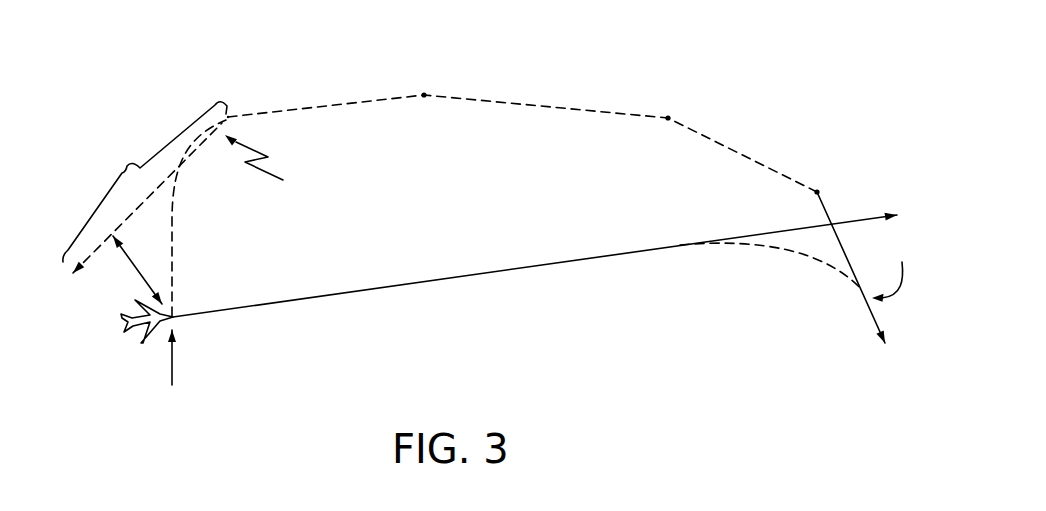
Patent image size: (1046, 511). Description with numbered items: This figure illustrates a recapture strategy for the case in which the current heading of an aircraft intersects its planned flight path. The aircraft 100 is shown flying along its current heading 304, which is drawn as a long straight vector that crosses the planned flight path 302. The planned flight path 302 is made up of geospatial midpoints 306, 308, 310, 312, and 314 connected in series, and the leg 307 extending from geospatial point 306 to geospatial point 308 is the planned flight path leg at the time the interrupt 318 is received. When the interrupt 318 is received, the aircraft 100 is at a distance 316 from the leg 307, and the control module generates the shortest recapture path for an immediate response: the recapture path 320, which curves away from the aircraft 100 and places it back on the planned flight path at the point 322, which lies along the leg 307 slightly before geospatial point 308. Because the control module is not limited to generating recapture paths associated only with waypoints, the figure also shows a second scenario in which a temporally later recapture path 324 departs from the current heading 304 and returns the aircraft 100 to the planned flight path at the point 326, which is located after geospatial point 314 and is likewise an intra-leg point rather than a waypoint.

The aircraft 100 is at (140, 346).
The planned flight path 302 is at (560, 105).
The current heading 304 is at (438, 280).
The geospatial midpoint 306 is at (66, 278).
The leg 307 is at (145, 182).
The geospatial midpoint 308 is at (232, 114).
The geospatial midpoint 310 is at (424, 95).
The geospatial midpoint 312 is at (668, 117).
The geospatial midpoint 314 is at (817, 191).
The distance 316 is at (137, 278).
The interrupt 318 is at (174, 368).
The recapture path 320 is at (176, 241).
The point 322 is at (279, 172).
The recapture path 324 is at (793, 252).
The point 326 is at (895, 269).